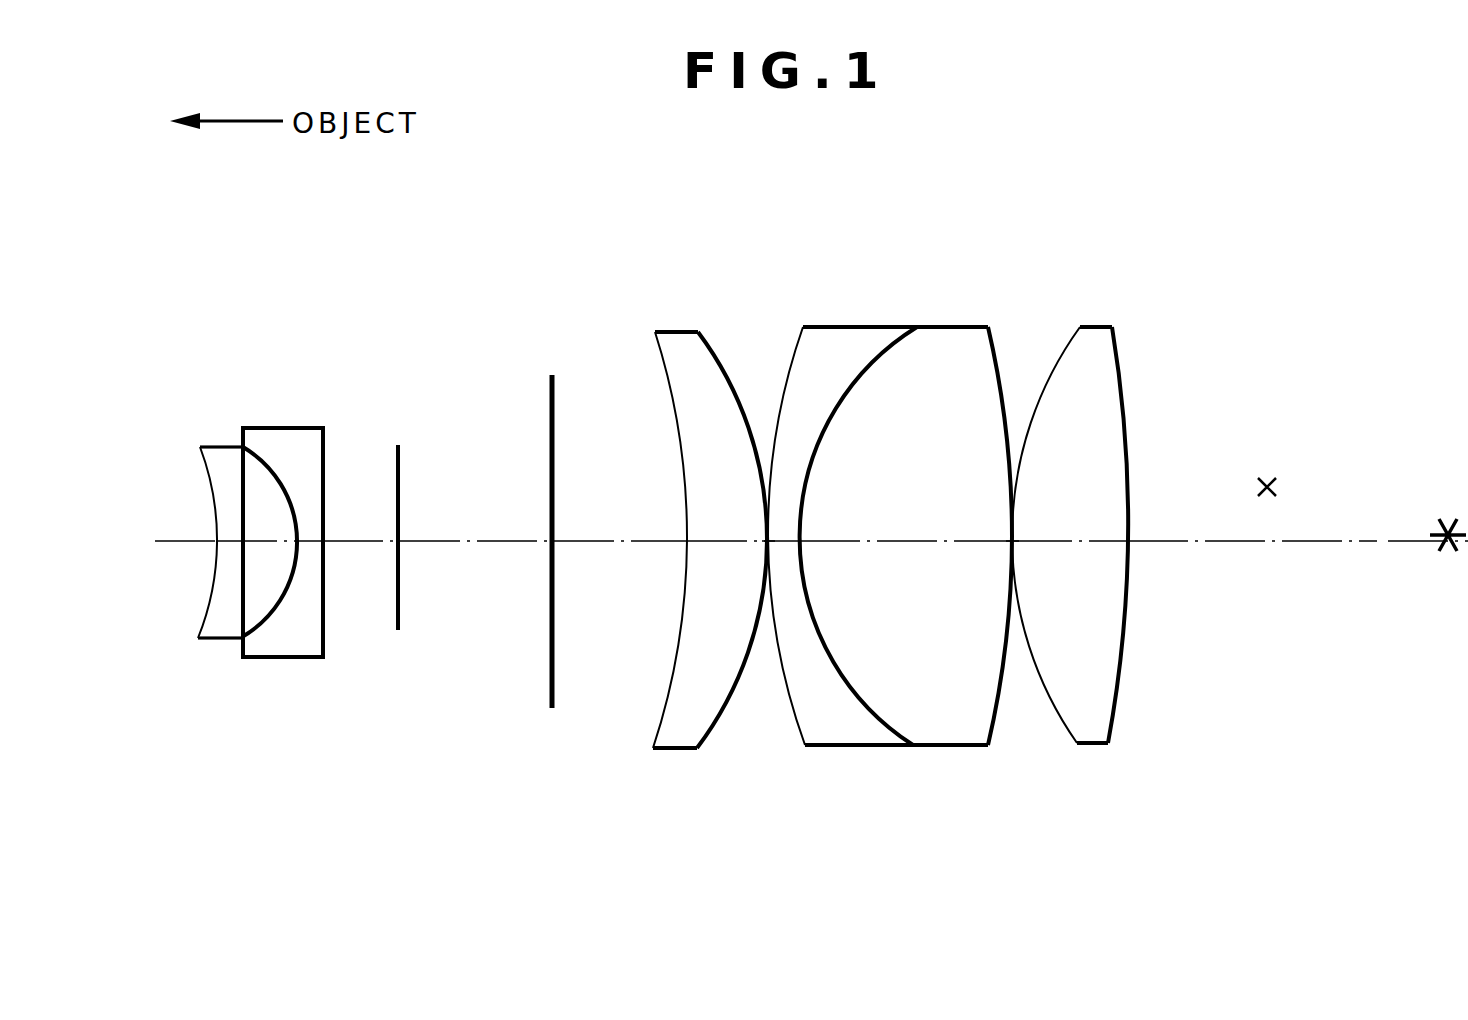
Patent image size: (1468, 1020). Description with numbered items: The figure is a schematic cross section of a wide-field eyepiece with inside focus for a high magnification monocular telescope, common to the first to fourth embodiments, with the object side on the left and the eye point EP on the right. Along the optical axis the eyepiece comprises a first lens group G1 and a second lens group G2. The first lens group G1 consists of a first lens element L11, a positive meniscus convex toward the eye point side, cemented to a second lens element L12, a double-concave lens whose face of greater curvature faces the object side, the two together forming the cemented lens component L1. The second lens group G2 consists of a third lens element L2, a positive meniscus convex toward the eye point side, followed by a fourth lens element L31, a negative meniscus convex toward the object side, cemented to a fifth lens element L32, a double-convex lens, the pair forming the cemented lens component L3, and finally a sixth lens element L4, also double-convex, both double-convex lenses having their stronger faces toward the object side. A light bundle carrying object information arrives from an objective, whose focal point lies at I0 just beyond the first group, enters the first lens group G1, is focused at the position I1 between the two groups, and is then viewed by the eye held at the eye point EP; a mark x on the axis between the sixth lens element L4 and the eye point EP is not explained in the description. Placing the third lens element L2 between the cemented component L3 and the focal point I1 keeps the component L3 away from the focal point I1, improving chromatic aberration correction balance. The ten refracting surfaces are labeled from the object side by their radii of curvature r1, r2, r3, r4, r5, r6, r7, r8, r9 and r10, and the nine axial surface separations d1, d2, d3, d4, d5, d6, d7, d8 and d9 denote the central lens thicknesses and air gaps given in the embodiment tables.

The first lens group G1 is at (178, 223).
The second lens group G2 is at (623, 227).
The cemented lens component L1 is at (340, 370).
The first lens element L11 is at (221, 445).
The second lens element L12 is at (297, 428).
The third lens element L2 is at (676, 332).
The cemented lens component L3 is at (1003, 283).
The fourth lens element L31 is at (835, 338).
The fifth lens element L32 is at (958, 340).
The sixth lens element L4 is at (1090, 332).
The radius of curvature of first refracting surface r1 is at (205, 610).
The radius of curvature of second refracting surface r2 is at (268, 620).
The radius of curvature of third refracting surface r3 is at (324, 640).
The radius of curvature of fourth refracting surface r4 is at (660, 712).
The radius of curvature of fifth refracting surface r5 is at (708, 722).
The radius of curvature of sixth refracting surface r6 is at (805, 722).
The radius of curvature of seventh refracting surface r7 is at (886, 726).
The radius of curvature of eighth refracting surface r8 is at (1000, 718).
The radius of curvature of ninth refracting surface r9 is at (1080, 725).
The radius of curvature of tenth refracting surface r10 is at (1115, 718).
The first axial surface separation d1 is at (258, 540).
The second axial surface separation d2 is at (306, 540).
The third axial surface separation d3 is at (512, 540).
The fourth axial surface separation d4 is at (700, 536).
The fifth axial surface separation d5 is at (770, 530).
The sixth axial surface separation d6 is at (787, 536).
The seventh axial surface separation d7 is at (912, 540).
The eighth axial surface separation d8 is at (1017, 536).
The ninth axial surface separation d9 is at (1103, 536).
The focal point of the objective I0 is at (399, 616).
The focal point I1 is at (552, 648).
The distance mark x is at (1300, 538).
The eye point EP is at (1448, 533).